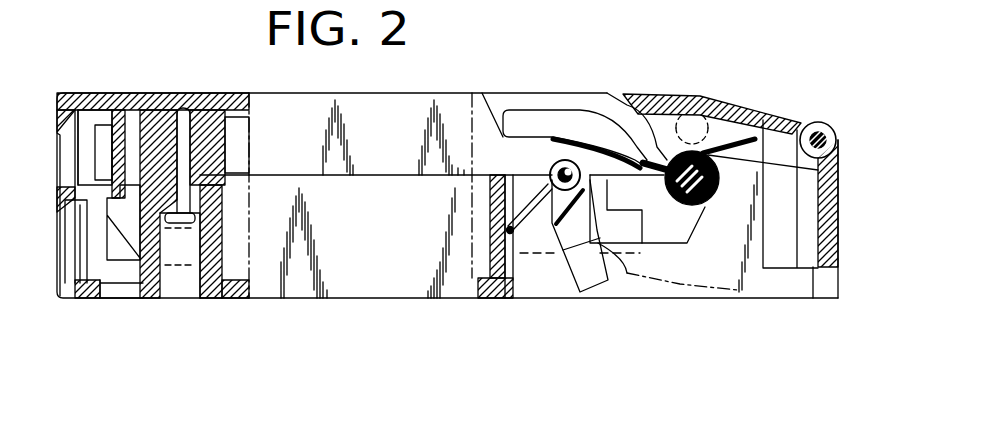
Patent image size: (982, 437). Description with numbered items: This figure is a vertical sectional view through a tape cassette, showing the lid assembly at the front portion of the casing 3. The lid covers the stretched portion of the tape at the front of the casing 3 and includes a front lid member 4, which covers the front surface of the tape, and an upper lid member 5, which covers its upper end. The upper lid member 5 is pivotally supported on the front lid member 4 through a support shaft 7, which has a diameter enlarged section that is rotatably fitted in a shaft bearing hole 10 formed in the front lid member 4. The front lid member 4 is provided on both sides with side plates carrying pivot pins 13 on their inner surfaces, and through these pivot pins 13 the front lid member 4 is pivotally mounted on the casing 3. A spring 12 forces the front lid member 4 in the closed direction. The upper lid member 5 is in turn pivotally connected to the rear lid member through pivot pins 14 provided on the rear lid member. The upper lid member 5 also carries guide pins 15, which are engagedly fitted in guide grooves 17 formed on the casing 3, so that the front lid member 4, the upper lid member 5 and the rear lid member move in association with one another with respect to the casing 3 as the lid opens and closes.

The casing 3 is at (452, 93).
The front lid member 4 is at (842, 195).
The upper lid member 5 is at (710, 94).
The support shaft 7 is at (818, 132).
The shaft bearing hole 10 is at (836, 130).
The spring 12 is at (763, 120).
The pivot pins 13 is at (705, 204).
The pivot pins 14 is at (680, 110).
The guide pins 15 is at (661, 190).
The guide grooves 17 is at (522, 108).